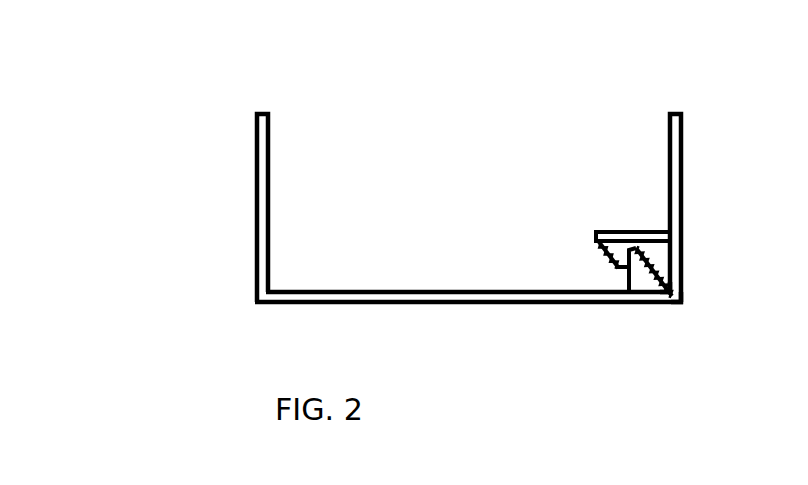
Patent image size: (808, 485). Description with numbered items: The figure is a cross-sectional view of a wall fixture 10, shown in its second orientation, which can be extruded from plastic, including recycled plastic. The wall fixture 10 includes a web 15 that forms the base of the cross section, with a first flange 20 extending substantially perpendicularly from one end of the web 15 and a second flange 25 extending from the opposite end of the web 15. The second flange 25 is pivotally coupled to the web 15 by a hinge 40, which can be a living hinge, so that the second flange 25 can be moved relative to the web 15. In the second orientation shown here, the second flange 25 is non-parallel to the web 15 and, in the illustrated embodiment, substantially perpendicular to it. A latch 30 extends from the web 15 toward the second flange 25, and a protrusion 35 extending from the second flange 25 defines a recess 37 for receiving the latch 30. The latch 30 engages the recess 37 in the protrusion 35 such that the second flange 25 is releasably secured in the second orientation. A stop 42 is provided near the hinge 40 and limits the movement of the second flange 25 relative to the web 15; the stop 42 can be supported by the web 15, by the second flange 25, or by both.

The wall fixture 10 is at (228, 90).
The web 15 is at (337, 305).
The first flange 20 is at (255, 222).
The second flange 25 is at (684, 176).
The latch 30 is at (642, 278).
The protrusion 35 is at (648, 230).
The recess 37 is at (612, 243).
The hinge 40 is at (683, 302).
The stop 42 is at (677, 303).